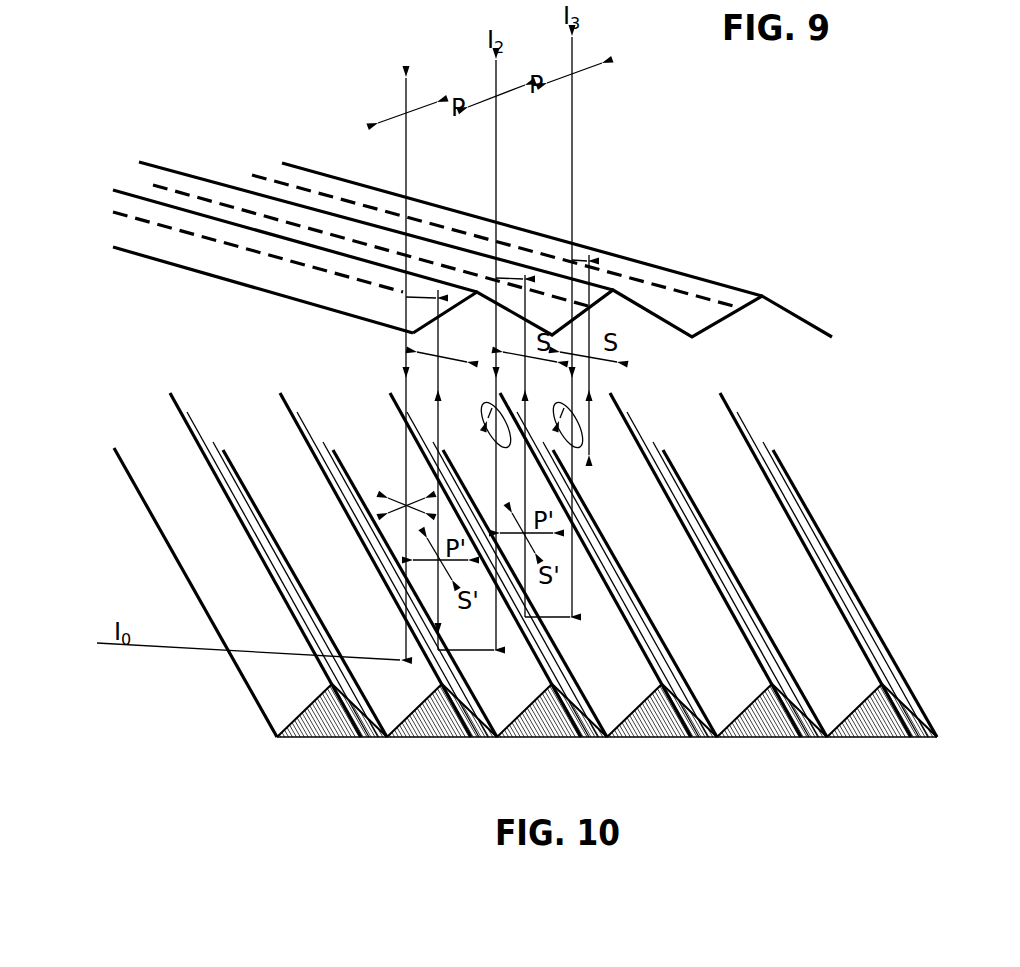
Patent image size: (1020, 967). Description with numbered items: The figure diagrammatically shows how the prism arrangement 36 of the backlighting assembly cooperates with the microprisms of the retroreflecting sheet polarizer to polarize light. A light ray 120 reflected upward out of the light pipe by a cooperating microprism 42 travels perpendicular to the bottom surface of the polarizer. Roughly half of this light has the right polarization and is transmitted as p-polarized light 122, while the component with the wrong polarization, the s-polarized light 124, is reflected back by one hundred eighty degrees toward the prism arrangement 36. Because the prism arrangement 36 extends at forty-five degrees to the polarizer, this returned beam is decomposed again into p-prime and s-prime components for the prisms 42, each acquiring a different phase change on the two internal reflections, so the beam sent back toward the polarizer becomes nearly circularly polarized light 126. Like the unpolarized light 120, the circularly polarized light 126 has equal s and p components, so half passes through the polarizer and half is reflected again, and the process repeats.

The prism arrangement 36 is at (525, 617).
The microprism 42 is at (388, 565).
The light ray 120 is at (463, 565).
The p-polarized light 122 is at (381, 352).
The s-polarized light 124 is at (424, 369).
The circularly polarized light 126 is at (534, 653).